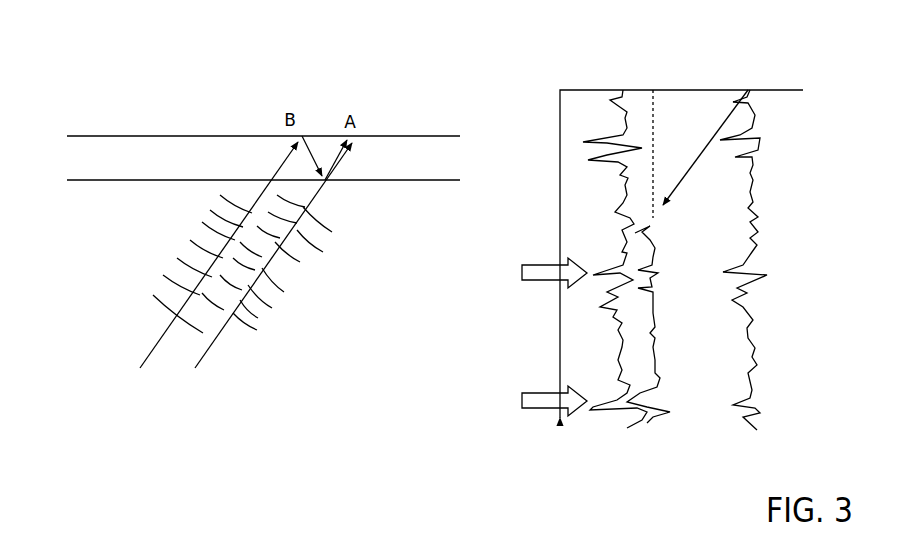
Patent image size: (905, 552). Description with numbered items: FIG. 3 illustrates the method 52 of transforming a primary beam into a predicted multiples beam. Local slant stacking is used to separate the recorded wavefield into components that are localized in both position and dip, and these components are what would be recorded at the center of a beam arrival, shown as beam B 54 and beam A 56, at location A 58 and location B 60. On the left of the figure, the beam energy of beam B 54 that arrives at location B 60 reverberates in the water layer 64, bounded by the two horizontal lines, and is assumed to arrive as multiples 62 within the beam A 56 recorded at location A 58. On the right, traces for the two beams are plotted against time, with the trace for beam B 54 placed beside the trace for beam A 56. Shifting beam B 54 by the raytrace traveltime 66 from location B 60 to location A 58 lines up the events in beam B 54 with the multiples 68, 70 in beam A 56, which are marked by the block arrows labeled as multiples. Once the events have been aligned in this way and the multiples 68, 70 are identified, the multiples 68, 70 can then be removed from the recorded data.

The method 52 is at (538, 52).
The beam B 54 is at (263, 188).
The beam A 56 is at (333, 193).
The location A 58 is at (357, 137).
The location B 60 is at (304, 133).
The multiples 62 is at (314, 148).
The water layer 64 is at (443, 160).
The raytrace traveltime 66 is at (727, 117).
The multiple 68 is at (667, 253).
The multiple 70 is at (670, 391).